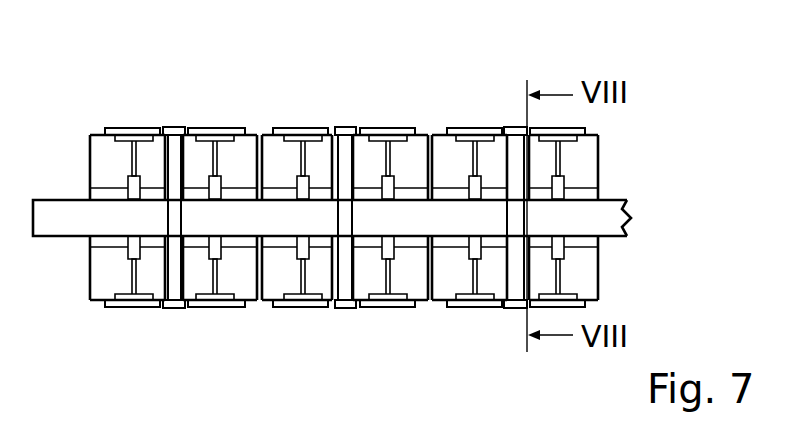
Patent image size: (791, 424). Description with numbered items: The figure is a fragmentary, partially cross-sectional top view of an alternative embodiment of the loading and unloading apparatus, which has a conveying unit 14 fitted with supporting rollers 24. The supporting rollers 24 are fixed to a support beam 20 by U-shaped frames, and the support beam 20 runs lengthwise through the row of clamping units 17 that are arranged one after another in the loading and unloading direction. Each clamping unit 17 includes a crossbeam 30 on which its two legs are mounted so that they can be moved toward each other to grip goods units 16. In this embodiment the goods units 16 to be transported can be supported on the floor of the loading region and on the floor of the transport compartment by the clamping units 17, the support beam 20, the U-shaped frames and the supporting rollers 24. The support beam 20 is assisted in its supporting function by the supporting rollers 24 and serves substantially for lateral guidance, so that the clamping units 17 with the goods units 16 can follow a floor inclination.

The conveying unit 14 is at (440, 303).
The goods units 16 is at (413, 155).
The clamping units 17 is at (132, 127).
The support beam 20 is at (328, 222).
The supporting rollers 24 is at (174, 128).
The crossbeam 30 is at (134, 191).